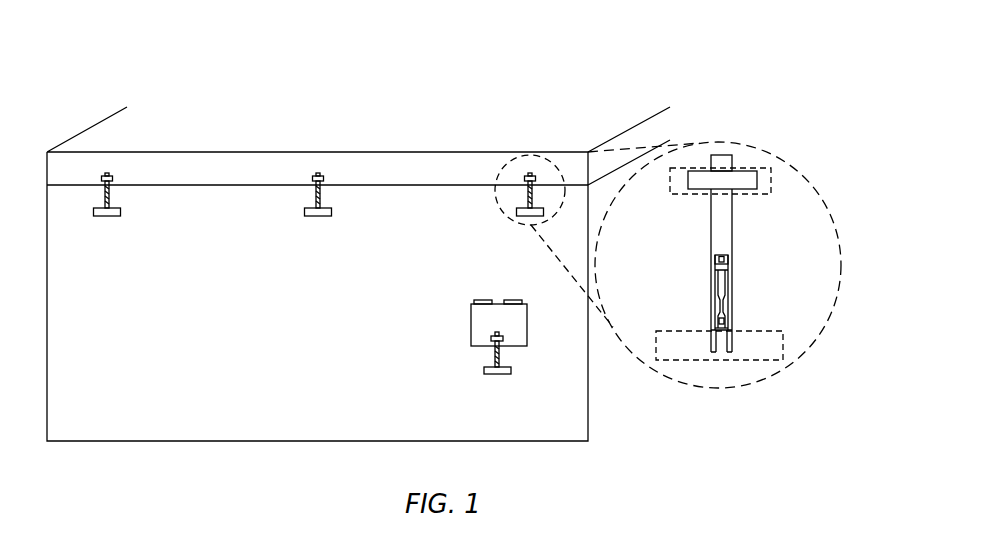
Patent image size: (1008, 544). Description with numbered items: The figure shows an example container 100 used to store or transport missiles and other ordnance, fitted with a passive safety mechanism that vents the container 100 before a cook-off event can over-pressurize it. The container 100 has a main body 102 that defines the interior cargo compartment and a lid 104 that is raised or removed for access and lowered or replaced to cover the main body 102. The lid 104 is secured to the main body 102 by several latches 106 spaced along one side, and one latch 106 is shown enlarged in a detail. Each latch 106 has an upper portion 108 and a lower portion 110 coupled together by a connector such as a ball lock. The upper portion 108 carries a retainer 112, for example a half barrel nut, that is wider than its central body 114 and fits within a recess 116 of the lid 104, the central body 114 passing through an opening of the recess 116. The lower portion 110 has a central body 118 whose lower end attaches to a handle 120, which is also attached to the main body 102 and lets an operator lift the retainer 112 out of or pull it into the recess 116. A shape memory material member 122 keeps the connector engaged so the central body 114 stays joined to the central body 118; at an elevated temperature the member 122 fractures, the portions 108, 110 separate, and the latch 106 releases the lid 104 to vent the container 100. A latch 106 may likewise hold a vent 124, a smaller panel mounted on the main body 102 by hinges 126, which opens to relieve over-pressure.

The container 100 is at (759, 73).
The main body 102 is at (262, 405).
The lid 104 is at (190, 171).
The latch 106 is at (103, 231).
The upper portion 108 is at (752, 210).
The lower portion 110 is at (745, 312).
The retainer 112 is at (742, 172).
The central body 114 is at (714, 213).
The recess 116 is at (776, 171).
The central body 118 is at (707, 313).
The handle 120 is at (744, 358).
The shape memory material member 122 is at (729, 282).
The vent 124 is at (469, 333).
The hinge 126 is at (470, 298).